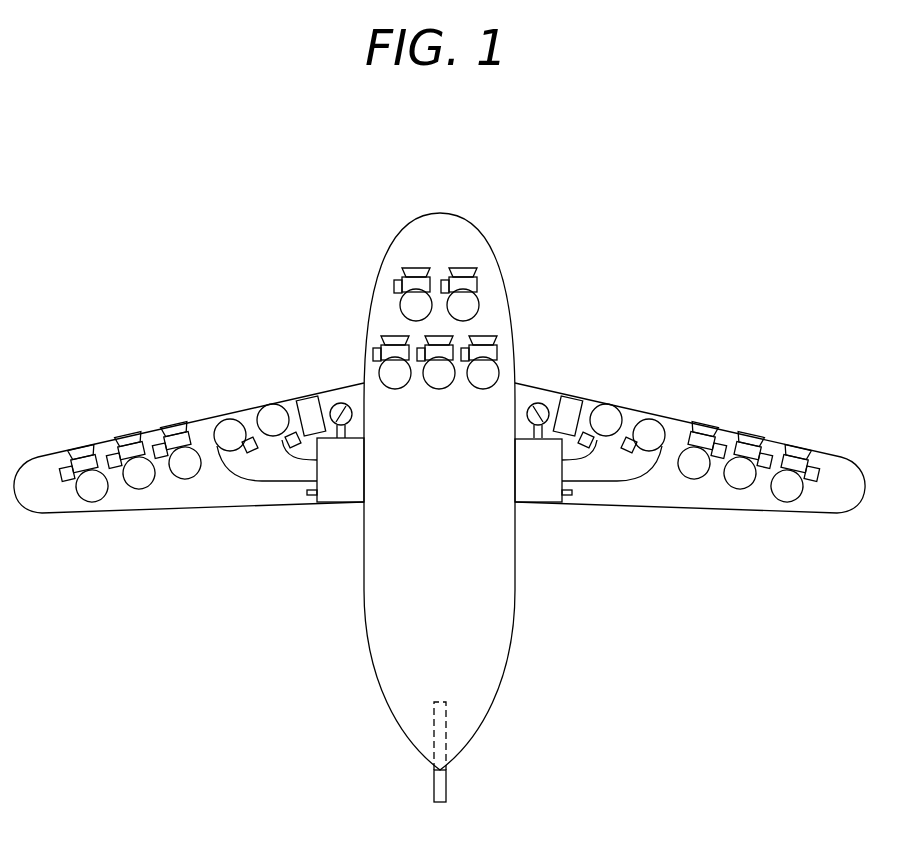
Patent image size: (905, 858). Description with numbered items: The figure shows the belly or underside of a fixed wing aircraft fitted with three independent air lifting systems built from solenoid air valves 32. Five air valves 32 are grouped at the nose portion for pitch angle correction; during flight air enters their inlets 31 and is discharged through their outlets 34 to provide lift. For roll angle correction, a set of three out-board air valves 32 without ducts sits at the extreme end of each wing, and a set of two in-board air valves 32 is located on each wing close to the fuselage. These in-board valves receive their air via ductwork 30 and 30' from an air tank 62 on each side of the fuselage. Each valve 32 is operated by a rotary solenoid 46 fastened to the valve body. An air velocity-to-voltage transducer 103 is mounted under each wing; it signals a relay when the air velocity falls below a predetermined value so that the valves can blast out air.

The ductwork 30 is at (257, 488).
The ductwork 30' is at (612, 498).
The inlet 31 is at (415, 265).
The air valve 32 is at (498, 348).
The outlet 34 is at (480, 305).
The rotary solenoid 46 is at (366, 347).
The air tank 62 is at (338, 503).
The air velocity-to-voltage transducer 103 is at (315, 396).